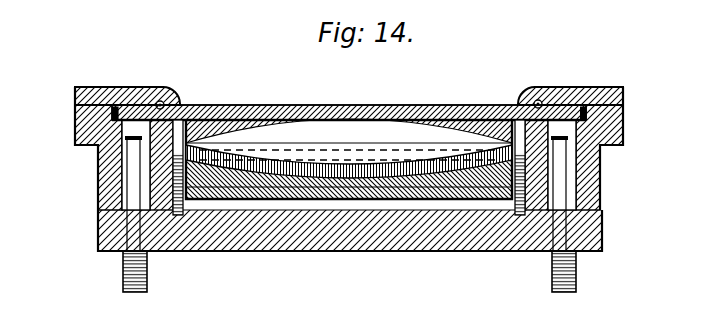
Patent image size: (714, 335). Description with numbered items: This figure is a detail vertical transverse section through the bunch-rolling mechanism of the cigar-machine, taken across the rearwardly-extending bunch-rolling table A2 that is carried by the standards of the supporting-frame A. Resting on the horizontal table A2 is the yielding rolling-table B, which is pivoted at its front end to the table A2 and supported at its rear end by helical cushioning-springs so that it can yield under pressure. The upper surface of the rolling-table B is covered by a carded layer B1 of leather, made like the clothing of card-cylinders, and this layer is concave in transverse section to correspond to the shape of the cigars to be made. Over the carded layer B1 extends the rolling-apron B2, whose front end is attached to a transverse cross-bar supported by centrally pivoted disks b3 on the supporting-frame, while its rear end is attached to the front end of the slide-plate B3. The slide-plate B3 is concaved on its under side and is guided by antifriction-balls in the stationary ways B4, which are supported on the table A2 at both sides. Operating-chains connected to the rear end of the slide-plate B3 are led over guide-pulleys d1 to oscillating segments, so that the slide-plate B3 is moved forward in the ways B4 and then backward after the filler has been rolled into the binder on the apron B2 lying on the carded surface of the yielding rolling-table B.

The supporting-frame A is at (350, 250).
The bunch-rolling table A2 is at (612, 223).
The yielding rolling-table B is at (290, 192).
The carded layer B1 is at (283, 173).
The rolling-apron B2 is at (378, 165).
The slide-plate B3 is at (302, 117).
The stationary ways B4 is at (633, 112).
The disks b3 is at (177, 214).
The guide-pulleys d1 is at (566, 282).